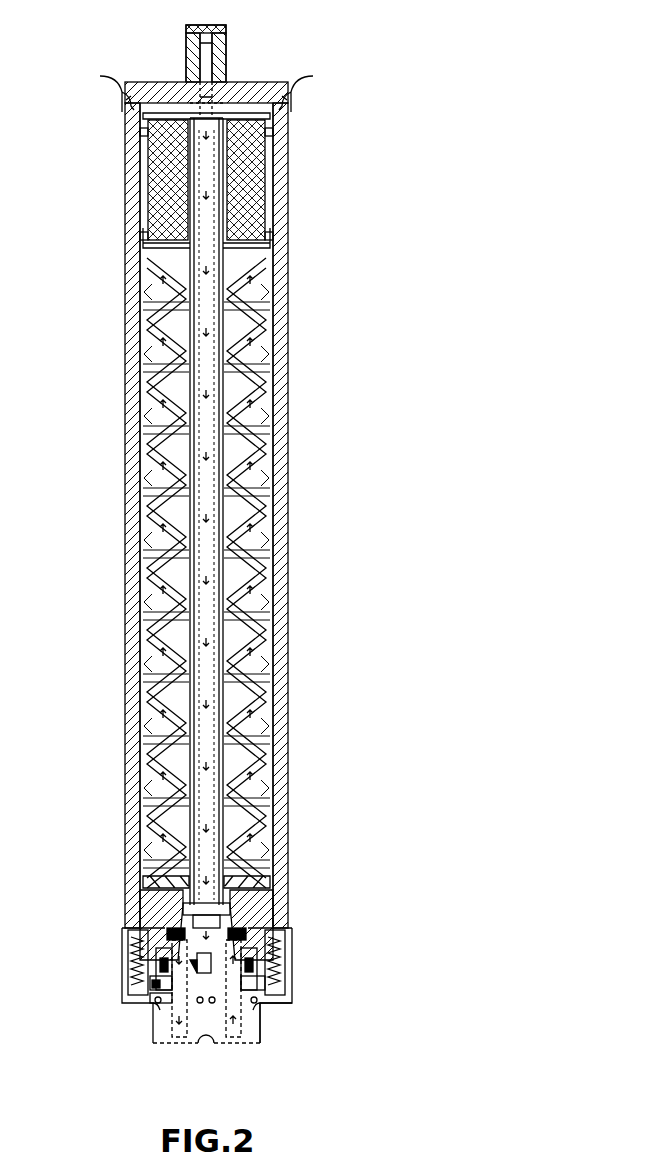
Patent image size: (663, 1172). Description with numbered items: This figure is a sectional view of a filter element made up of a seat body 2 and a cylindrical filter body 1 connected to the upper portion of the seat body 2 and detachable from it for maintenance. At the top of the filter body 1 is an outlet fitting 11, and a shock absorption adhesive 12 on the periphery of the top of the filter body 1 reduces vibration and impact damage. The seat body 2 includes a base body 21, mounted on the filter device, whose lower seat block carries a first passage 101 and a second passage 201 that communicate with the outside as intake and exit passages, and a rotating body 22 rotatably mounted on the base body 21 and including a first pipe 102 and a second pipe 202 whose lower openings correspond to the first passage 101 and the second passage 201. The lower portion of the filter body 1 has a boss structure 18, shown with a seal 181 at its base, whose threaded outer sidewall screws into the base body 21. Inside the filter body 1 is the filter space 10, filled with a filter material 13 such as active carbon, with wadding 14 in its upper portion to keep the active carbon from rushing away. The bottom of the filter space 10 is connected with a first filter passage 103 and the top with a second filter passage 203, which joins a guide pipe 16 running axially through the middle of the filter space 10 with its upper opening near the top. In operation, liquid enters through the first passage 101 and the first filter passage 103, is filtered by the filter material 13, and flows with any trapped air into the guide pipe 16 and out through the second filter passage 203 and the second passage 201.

The filter body 1 is at (132, 481).
The seat body 2 is at (124, 1005).
The filter space 10 is at (263, 443).
The water outlet nozzle 11 is at (218, 40).
The shock absorption adhesive 12 is at (122, 96).
The filter material 13 is at (160, 422).
The wadding 14 is at (255, 165).
The guide pipe 16 is at (223, 520).
The boss structure 18 is at (152, 958).
The base body 21 is at (252, 1032).
The rotating body 22 is at (165, 1005).
The first passage 101 is at (232, 1032).
The first pipe 102 is at (262, 990).
The first filter passage 103 is at (243, 905).
The valve sealing ring 181 is at (150, 972).
The second passage 201 is at (180, 1032).
The second pipe 202 is at (140, 942).
The second filter passage 203 is at (175, 912).